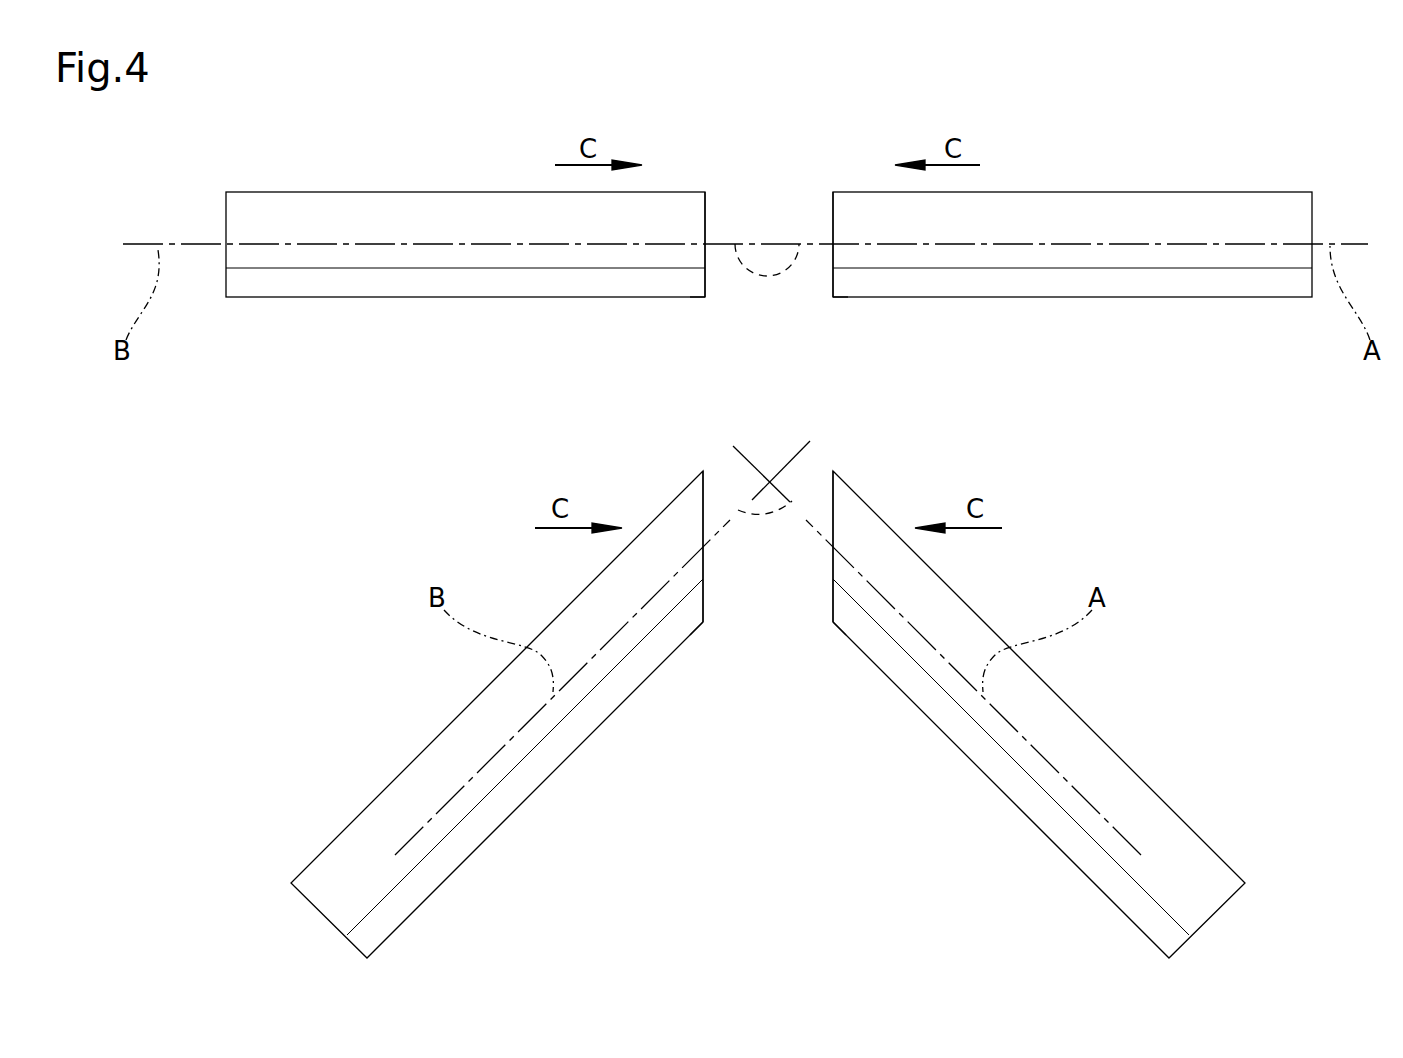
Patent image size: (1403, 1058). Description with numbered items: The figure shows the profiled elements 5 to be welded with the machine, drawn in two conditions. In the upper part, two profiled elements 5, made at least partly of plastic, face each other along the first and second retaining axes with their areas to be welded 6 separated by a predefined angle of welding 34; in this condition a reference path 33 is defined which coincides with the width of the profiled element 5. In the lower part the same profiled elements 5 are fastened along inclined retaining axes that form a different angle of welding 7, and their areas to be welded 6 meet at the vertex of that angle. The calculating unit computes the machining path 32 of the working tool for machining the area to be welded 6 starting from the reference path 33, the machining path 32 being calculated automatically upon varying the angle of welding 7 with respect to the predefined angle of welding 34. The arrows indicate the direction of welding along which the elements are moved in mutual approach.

The profiled element 5 is at (364, 215).
The area to be welded 6 is at (832, 216).
The angle of welding 7 is at (760, 512).
The machining path 32 is at (703, 600).
The reference path 33 is at (706, 290).
The predefined angle of welding 34 is at (760, 276).